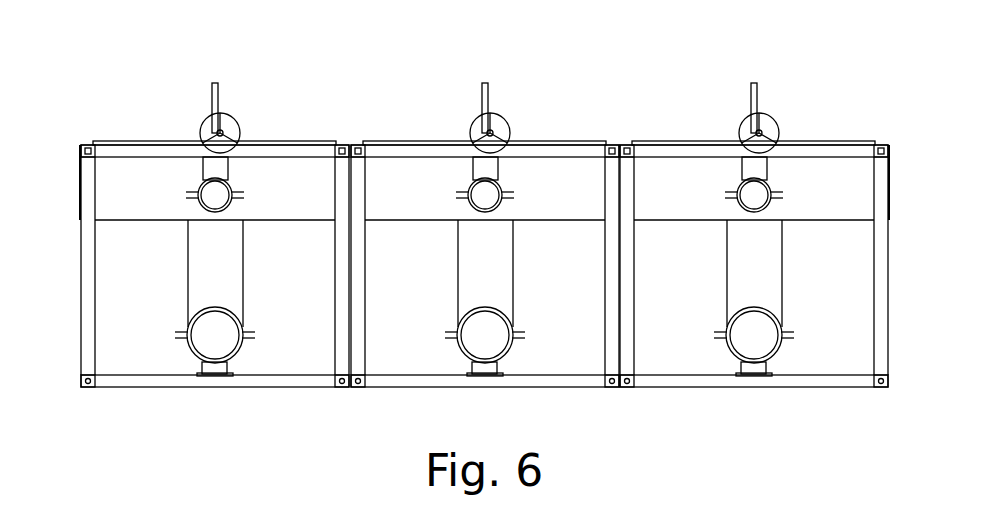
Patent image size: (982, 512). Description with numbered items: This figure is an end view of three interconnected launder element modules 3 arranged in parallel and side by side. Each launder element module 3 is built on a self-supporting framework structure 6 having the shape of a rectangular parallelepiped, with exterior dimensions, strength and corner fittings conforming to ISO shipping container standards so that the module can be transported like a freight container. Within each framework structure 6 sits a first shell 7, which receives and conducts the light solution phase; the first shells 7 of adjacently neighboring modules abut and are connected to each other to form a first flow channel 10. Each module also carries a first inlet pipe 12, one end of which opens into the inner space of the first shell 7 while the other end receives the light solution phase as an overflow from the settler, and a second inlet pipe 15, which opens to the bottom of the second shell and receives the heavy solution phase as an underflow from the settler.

The launder element module 3 is at (257, 83).
The framework structure 6 is at (263, 382).
The first shell 7 is at (139, 177).
The first flow channel 10 is at (130, 205).
The first inlet pipe 12 is at (203, 210).
The second inlet pipe 15 is at (192, 323).